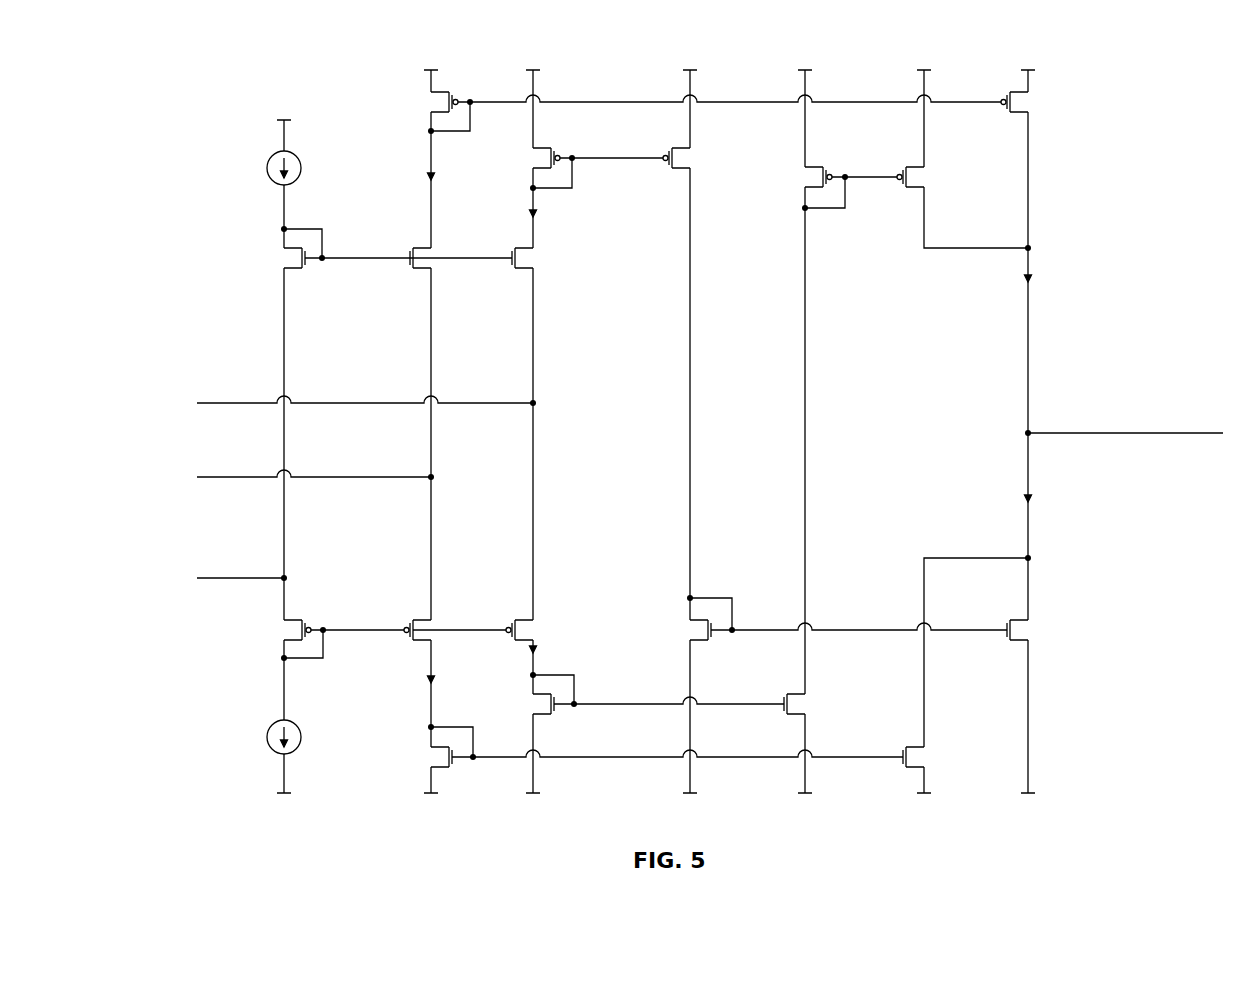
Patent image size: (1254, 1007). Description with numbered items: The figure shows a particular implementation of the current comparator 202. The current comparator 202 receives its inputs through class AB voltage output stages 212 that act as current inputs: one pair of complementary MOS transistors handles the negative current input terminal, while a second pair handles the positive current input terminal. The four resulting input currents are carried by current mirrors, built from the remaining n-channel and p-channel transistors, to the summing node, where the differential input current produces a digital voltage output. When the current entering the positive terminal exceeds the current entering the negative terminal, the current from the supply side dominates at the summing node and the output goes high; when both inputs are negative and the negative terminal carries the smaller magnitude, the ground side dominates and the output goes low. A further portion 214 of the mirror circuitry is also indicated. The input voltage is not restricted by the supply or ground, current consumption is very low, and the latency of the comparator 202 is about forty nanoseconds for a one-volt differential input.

The current comparator 202 is at (193, 82).
The class AB voltage output stages 212 is at (479, 799).
The second current mirror 214 is at (872, 798).